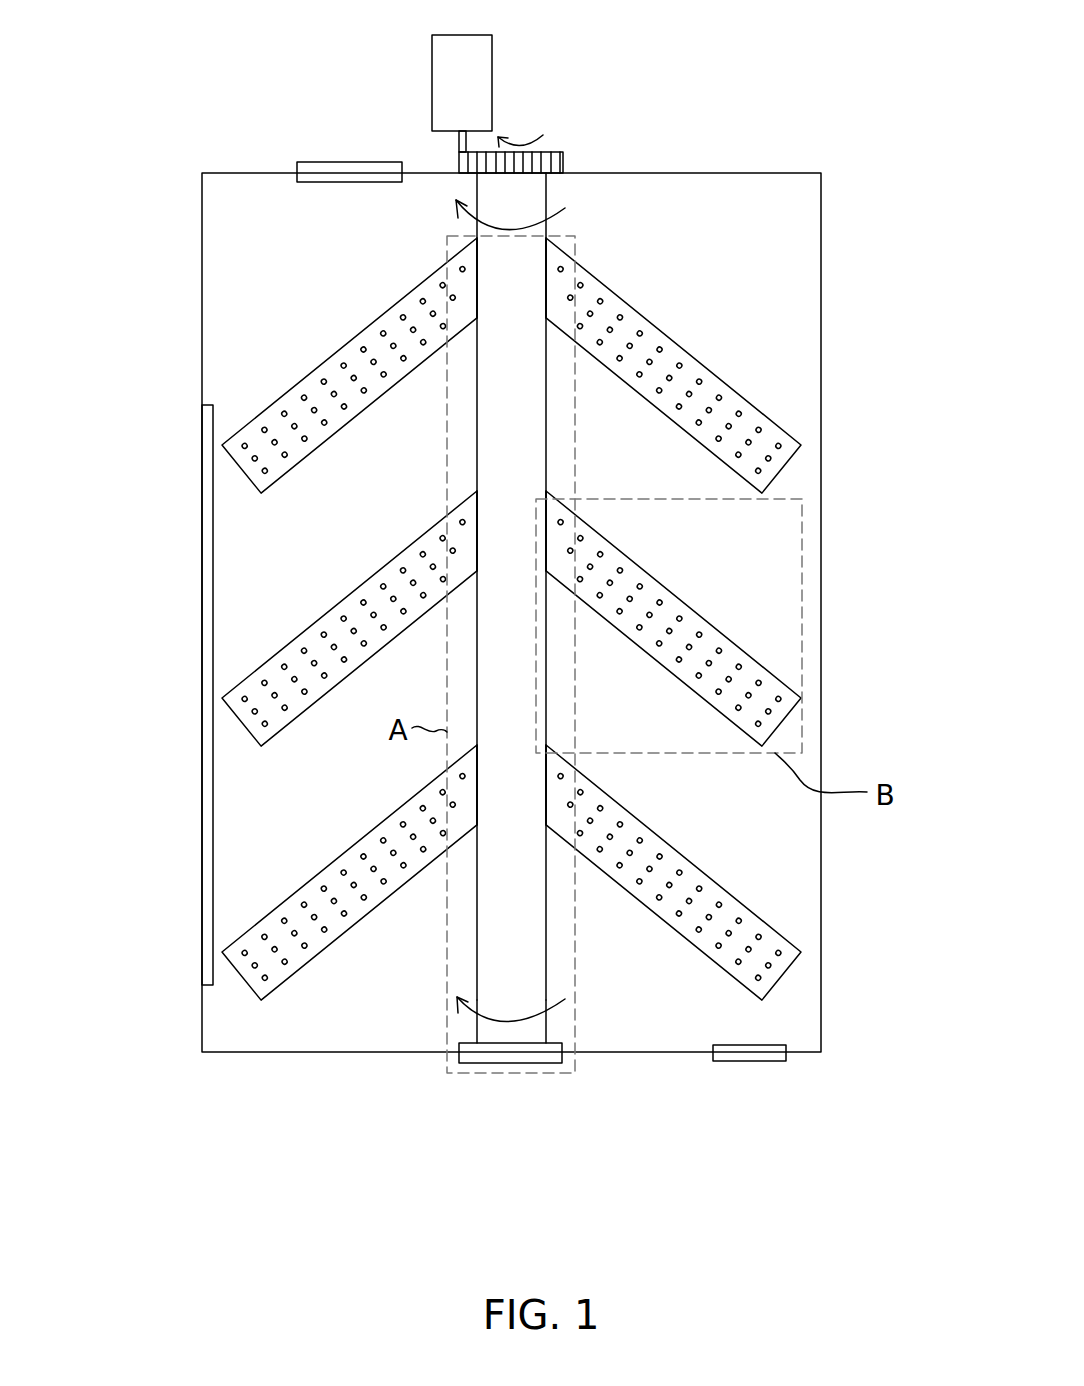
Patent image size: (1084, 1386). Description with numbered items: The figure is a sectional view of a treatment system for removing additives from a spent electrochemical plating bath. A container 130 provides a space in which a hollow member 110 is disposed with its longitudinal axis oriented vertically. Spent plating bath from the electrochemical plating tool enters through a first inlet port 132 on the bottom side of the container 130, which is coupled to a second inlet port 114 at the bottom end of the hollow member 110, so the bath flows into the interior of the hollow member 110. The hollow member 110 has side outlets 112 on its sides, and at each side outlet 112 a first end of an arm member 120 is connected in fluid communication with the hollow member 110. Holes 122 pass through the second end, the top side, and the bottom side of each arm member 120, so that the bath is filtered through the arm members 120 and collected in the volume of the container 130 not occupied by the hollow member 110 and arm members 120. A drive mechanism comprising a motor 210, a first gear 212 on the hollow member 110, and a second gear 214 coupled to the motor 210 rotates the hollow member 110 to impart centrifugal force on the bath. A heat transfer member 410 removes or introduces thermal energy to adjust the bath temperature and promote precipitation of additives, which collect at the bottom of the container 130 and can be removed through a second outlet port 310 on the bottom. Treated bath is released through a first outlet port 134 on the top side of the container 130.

The hollow member 110 is at (547, 190).
The side outlet 112 is at (477, 285).
The second inlet port 114 is at (476, 1042).
The arm member 120 is at (292, 387).
The holes 122 is at (245, 445).
The container 130 is at (770, 172).
The first inlet port 132 is at (553, 1065).
The first outlet port 134 is at (314, 162).
The motor 210 is at (432, 60).
The first gear 212 is at (563, 152).
The second gear 214 is at (459, 163).
The second outlet port 310 is at (757, 1062).
The heat transfer member 410 is at (206, 969).